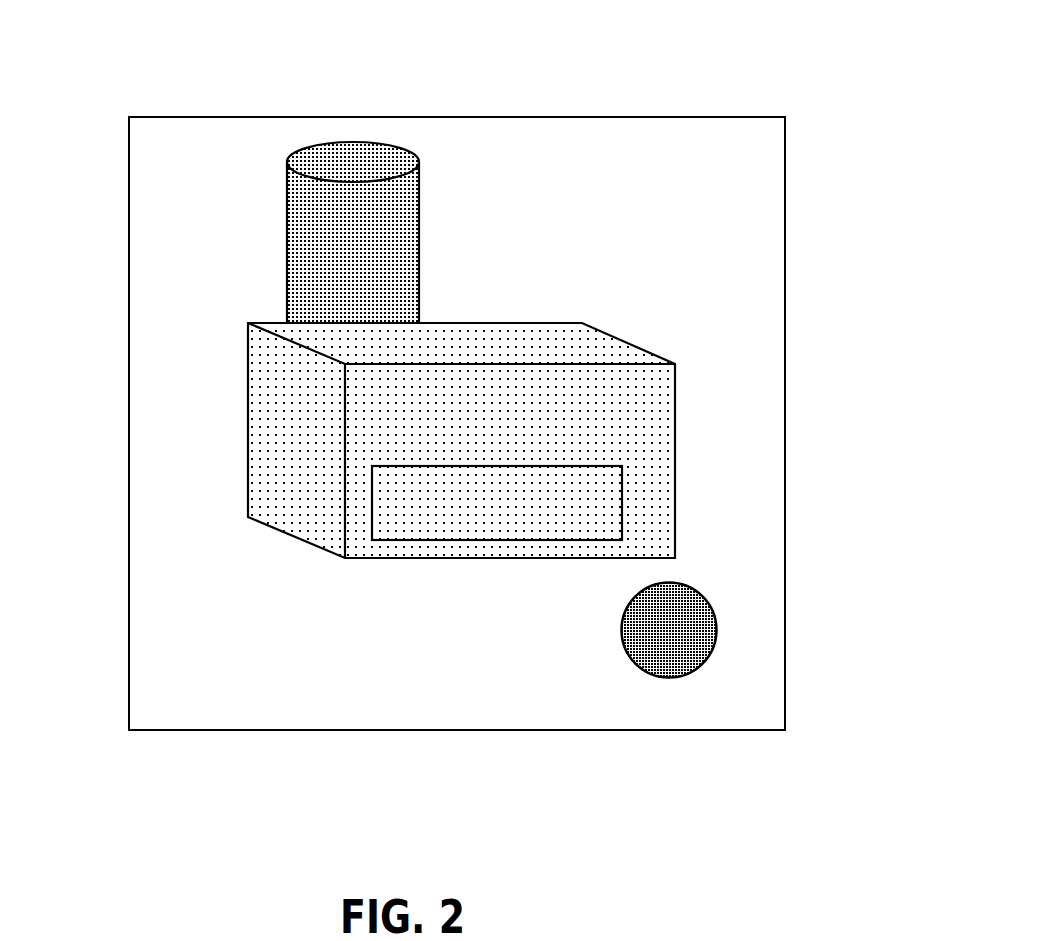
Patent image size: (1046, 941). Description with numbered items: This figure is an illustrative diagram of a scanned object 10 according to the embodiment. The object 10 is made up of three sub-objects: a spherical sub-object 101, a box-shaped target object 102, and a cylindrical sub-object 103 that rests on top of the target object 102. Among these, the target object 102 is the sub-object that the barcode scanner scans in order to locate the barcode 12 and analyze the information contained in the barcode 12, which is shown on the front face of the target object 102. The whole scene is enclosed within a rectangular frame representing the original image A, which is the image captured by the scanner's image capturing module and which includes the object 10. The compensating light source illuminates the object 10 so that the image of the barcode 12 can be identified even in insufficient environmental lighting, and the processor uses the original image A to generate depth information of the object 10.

The scanned object 10 is at (598, 187).
The sub-object 101 is at (620, 633).
The target object 102 is at (461, 431).
The sub-object 103 is at (417, 242).
The barcode 12 is at (438, 527).
The original image A is at (129, 288).